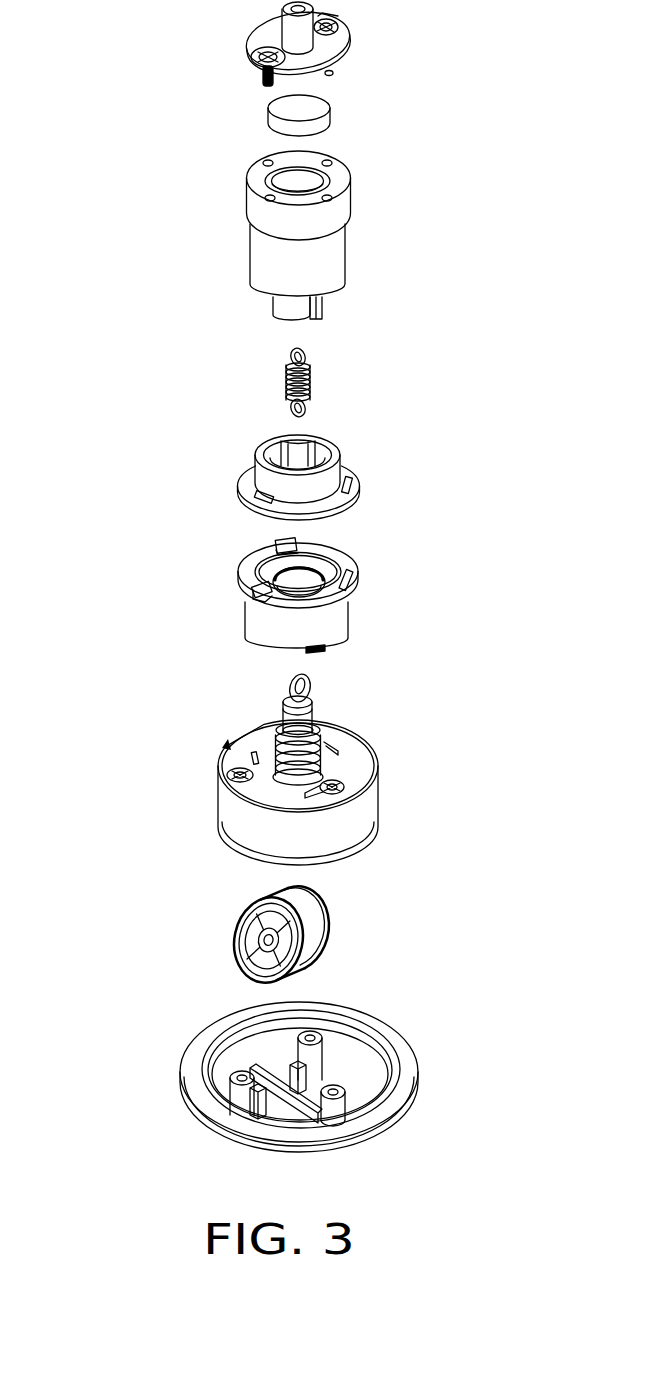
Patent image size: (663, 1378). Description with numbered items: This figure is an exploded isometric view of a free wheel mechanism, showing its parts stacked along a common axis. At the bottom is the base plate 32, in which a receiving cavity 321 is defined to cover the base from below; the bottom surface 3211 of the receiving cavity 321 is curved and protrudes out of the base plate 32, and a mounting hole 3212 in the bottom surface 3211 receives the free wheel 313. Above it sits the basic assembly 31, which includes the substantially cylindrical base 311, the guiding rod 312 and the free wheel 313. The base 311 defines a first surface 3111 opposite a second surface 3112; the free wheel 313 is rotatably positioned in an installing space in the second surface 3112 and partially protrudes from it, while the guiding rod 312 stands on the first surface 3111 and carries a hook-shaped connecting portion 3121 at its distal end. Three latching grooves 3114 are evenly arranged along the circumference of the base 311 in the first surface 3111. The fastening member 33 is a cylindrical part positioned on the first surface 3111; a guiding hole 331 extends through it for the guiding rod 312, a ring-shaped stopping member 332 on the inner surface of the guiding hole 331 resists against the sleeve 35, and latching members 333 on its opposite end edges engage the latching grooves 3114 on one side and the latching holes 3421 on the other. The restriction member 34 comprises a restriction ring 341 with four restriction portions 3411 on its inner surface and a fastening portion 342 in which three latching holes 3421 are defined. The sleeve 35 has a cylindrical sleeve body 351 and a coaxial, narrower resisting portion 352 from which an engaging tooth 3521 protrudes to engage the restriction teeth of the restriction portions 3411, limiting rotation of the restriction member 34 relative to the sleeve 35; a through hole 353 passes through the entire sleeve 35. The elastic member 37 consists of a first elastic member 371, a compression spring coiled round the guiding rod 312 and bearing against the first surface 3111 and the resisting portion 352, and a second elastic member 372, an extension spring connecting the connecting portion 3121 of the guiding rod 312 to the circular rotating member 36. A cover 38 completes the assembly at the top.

The cover 38 is at (333, 42).
The rotating member 36 is at (313, 113).
The sleeve 35 is at (263, 225).
The sleeve body 351 is at (273, 258).
The resisting portion 352 is at (290, 306).
The engaging tooth 3521 is at (322, 305).
The through hole 353 is at (294, 184).
The elastic member 37 is at (434, 565).
The second elastic member 372 is at (316, 388).
The first elastic member 371 is at (394, 688).
The restriction member 34 is at (224, 471).
The restriction ring 341 is at (262, 455).
The restriction portion 3411 is at (300, 437).
The fastening portion 342 is at (250, 483).
The latching hole 3421 is at (262, 500).
The fastening member 33 is at (303, 603).
The guiding hole 331 is at (272, 551).
The stopping member 332 is at (297, 584).
The latching member 333 is at (353, 577).
The basic assembly 31 is at (253, 833).
The base 311 is at (283, 793).
The first surface 3111 is at (263, 788).
The second surface 3112 is at (233, 853).
The latching groove 3114 is at (330, 745).
The guiding rod 312 is at (194, 710).
The connecting portion 3121 is at (288, 693).
The free wheel 313 is at (209, 934).
The base plate 32 is at (316, 1066).
The receiving cavity 321 is at (342, 1056).
The bottom surface 3211 is at (365, 1090).
The mounting hole 3212 is at (288, 1113).